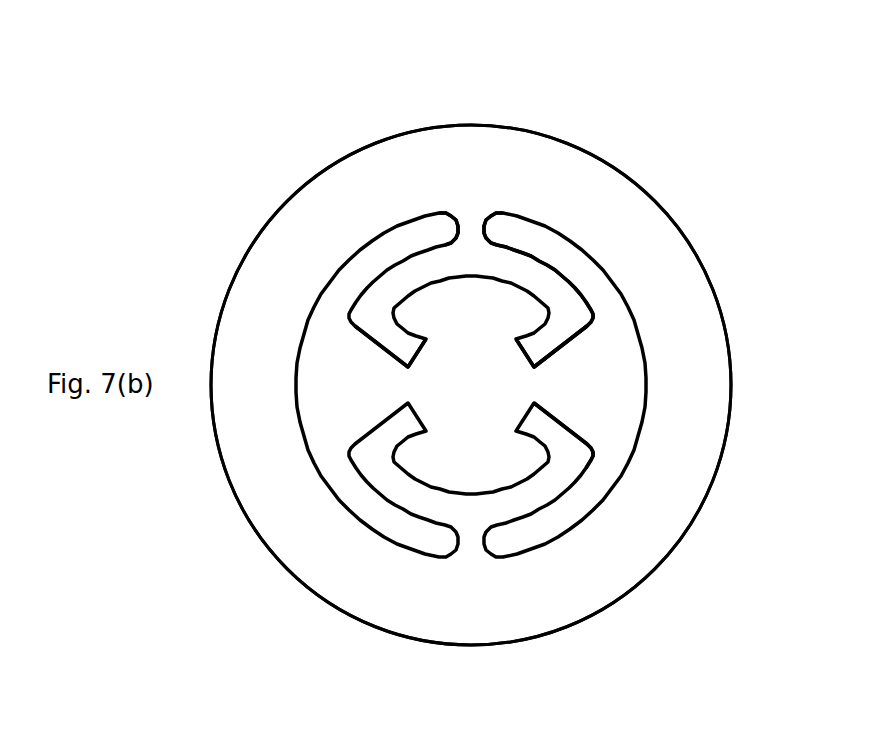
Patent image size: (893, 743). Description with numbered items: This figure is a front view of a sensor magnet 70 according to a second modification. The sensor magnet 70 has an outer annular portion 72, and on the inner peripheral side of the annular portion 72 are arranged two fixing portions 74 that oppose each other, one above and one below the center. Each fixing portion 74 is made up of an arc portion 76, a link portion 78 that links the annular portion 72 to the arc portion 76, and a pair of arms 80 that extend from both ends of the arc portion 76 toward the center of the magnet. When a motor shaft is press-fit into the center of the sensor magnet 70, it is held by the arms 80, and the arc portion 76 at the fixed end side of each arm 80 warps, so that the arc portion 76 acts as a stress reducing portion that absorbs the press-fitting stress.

The sensor magnet 70 is at (487, 707).
The annular portion 72 is at (633, 237).
The fixing portion 74 is at (595, 345).
The arc portion 76 is at (513, 263).
The link portion 78 is at (473, 226).
The arm 80 is at (404, 341).